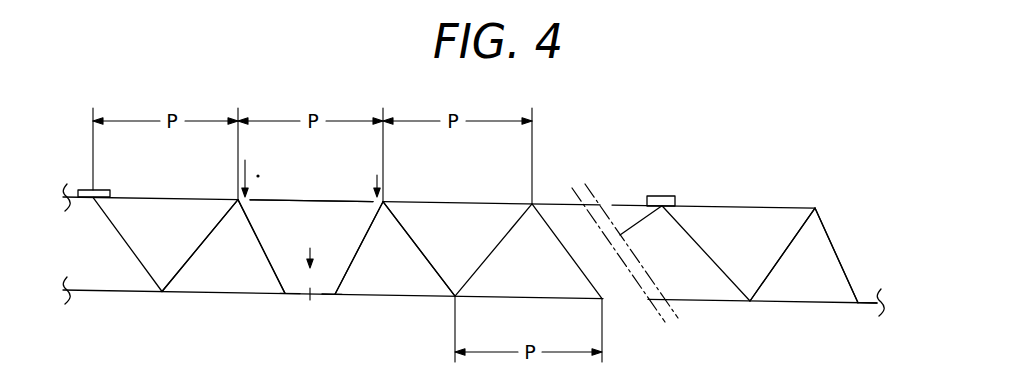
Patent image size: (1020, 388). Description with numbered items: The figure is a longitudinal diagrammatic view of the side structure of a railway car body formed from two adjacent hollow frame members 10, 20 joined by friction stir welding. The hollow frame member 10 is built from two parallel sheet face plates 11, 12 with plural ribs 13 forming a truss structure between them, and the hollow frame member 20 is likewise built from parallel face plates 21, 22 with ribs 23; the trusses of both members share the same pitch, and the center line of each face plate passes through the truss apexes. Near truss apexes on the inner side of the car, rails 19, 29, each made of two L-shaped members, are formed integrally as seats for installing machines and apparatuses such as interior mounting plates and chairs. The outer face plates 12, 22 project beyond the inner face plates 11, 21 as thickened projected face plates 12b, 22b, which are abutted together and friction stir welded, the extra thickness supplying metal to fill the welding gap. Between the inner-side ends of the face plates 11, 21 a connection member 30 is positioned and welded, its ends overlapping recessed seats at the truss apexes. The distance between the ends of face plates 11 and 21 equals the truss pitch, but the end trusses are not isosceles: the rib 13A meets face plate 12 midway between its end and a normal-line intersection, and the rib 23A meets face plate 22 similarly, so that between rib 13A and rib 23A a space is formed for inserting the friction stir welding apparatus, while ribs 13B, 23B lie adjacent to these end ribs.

The hollow frame member 10 is at (333, 261).
The face plate 11 is at (183, 197).
The face plate 12 is at (202, 293).
The projected face plate 12b is at (295, 294).
The rib 13 is at (128, 240).
The rib 13A is at (257, 233).
The rib 13B is at (185, 267).
The rail 19 is at (112, 188).
The hollow frame member 20 is at (567, 266).
The face plate 21 is at (462, 202).
The face plate 22 is at (408, 298).
The projected face plate 22b is at (332, 295).
The rib 23 is at (573, 267).
The rib 23A is at (410, 228).
The rib 23B is at (355, 265).
The rail 29 is at (663, 196).
The connection member 30 is at (308, 199).